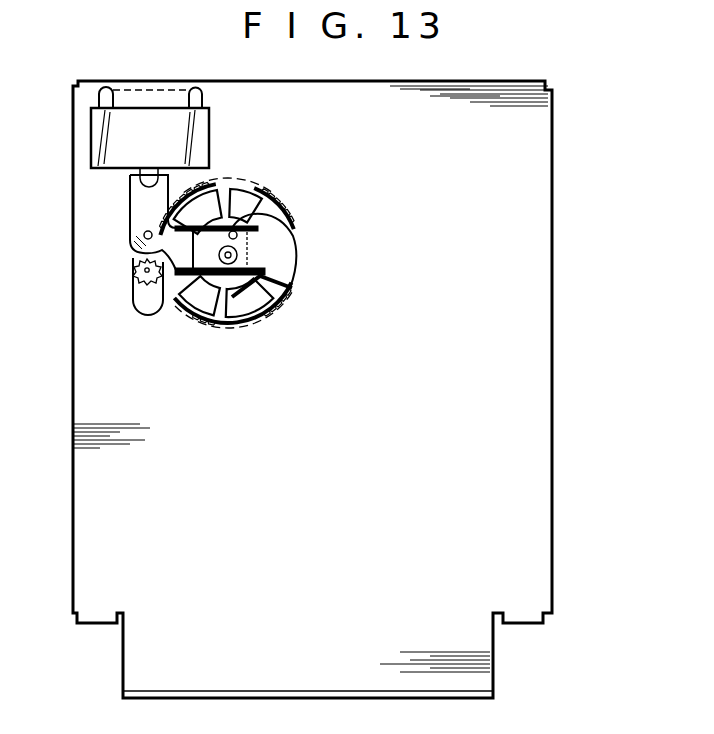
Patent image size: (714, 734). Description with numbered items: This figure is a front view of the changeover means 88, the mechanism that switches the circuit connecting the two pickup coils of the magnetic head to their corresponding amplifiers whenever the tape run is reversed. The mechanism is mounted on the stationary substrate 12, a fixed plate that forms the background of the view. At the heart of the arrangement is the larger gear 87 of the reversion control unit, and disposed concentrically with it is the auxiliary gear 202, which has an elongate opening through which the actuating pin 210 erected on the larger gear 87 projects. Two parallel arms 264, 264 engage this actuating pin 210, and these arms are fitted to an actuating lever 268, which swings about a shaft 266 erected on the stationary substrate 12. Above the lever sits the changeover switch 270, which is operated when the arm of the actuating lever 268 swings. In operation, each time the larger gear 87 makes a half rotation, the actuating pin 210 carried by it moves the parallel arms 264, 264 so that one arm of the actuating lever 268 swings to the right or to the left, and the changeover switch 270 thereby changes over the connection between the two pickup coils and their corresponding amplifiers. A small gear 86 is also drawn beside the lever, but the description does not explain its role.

The stationary substrate 12 is at (545, 242).
The changeover means 88 is at (109, 77).
The changeover switch 270 is at (96, 131).
The actuating lever 268 is at (138, 212).
The shaft 266 is at (143, 237).
The small gear 86 is at (135, 274).
The larger gear 87 is at (239, 261).
The actuating pin 210 is at (262, 206).
The auxiliary gear 202 is at (288, 258).
The parallel arms 264 is at (283, 222).